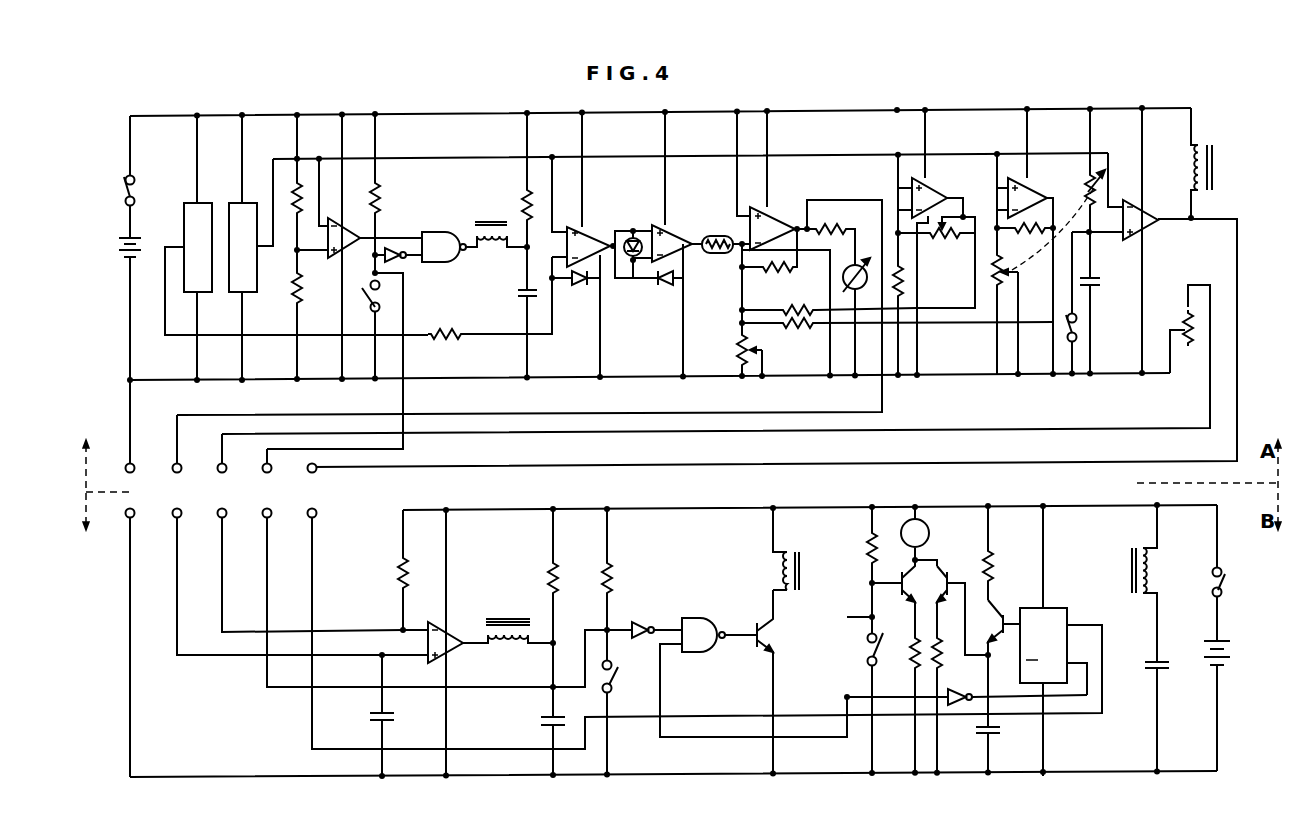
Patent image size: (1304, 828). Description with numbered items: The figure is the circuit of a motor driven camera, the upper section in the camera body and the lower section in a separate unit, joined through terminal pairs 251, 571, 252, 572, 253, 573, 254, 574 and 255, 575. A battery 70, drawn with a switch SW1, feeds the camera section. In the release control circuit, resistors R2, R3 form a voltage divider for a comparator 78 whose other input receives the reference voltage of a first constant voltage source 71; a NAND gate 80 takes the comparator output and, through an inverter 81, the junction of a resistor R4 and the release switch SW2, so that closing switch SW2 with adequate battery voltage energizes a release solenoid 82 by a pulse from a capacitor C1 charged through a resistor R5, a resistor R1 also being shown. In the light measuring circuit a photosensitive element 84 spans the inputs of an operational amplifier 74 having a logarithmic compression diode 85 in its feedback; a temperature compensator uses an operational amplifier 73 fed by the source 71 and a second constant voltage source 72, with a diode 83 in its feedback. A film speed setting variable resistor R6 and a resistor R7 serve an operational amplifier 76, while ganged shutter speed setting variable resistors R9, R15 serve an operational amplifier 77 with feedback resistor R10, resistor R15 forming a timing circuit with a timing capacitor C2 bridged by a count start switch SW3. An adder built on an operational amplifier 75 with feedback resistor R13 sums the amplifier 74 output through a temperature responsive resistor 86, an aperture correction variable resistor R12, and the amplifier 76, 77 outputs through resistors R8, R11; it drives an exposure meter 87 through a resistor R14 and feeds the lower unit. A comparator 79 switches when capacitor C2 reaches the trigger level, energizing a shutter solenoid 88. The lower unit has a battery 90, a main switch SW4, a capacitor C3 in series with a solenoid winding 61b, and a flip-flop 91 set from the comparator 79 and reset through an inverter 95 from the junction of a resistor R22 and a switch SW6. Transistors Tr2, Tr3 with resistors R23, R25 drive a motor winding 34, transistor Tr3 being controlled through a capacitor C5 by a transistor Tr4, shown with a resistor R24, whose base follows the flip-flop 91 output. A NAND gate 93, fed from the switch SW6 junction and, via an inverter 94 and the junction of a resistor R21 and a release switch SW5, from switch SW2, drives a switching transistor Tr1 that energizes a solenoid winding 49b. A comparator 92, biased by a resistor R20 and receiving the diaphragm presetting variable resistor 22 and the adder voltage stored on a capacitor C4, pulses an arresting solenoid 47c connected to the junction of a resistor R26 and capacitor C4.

The diaphragm presetting responsive variable resistor 22 is at (1183, 325).
The motor winding 34 is at (930, 533).
The solenoid of arresting control electromagnet 47c is at (519, 619).
The solenoid winding of release control electromagnet 49b is at (808, 549).
The solenoid winding 61b is at (1129, 583).
The battery 70 is at (115, 253).
The first constant voltage source 71 is at (251, 225).
The second constant voltage source 72 is at (296, 269).
The operational amplifier 73 is at (578, 238).
The operational amplifier 74 is at (663, 236).
The operational amplifier 75 is at (768, 228).
The operational amplifier 76 is at (928, 198).
The operational amplifier 77 is at (1028, 198).
The comparator 78 is at (340, 236).
The comparator 79 is at (1142, 219).
The NAND gate 80 is at (449, 247).
The inverter 81 is at (404, 259).
The camera release actuating solenoid 82 is at (485, 222).
The diode 83 is at (576, 316).
The photosensitive element 84 is at (630, 265).
The logarithmic compression diode 85 is at (658, 310).
The temperature responsive resistor 86 is at (726, 265).
The electric exposure meter 87 is at (846, 273).
The solenoid for shutter control electromagnet 88 is at (1216, 163).
The battery 90 is at (1229, 706).
The flip-flop 91 is at (1062, 610).
The comparator 92 is at (455, 649).
The NAND gate 93 is at (753, 677).
The inverter 94 is at (634, 626).
The inverter 95 is at (952, 696).
The connector terminal 251 is at (150, 433).
The terminal 252 is at (197, 451).
The terminal 253 is at (242, 460).
The terminal 254 is at (287, 468).
The terminal 255 is at (332, 485).
The connector terminal 571 is at (150, 641).
The terminal 572 is at (301, 580).
The terminal 573 is at (311, 569).
The terminal 574 is at (435, 596).
The terminal 575 is at (705, 627).
The resistor R1 is at (490, 322).
The resistor R2 is at (302, 184).
The resistor R3 is at (289, 314).
The resistor R4 is at (388, 195).
The resistor R5 is at (517, 201).
The film speed setting variable resistor R6 is at (936, 242).
The resistor R7 is at (905, 286).
The resistor R8 is at (829, 300).
The shutter speed setting variable resistor R9 is at (1037, 280).
The feedback resistor R10 is at (1025, 243).
The resistor R11 is at (897, 338).
The aperture correction factor setting variable resistor R12 is at (736, 354).
The feedback resistor R13 is at (769, 266).
The resistor R14 is at (834, 234).
The shutter speed setting variable resistor R15 is at (1081, 193).
The resistor R20 is at (421, 594).
The resistor R21 is at (625, 584).
The resistor R22 is at (870, 603).
The resistor R23 is at (912, 645).
The resistor R24 is at (1006, 553).
The resistor R25 is at (934, 648).
The resistor R26 is at (571, 613).
The capacitor C1 is at (518, 329).
The timing capacitor C2 is at (1103, 324).
The capacitor C3 is at (1170, 714).
The capacitor C4 is at (467, 714).
The capacitor C5 is at (1000, 713).
The switch SW1 is at (111, 191).
The camera release switch SW2 is at (368, 330).
The count start switch SW3 is at (1078, 327).
The main switch SW4 is at (1243, 573).
The release switch SW5 is at (635, 718).
The switch SW6 is at (897, 703).
The switching transistor Tr1 is at (782, 682).
The transistor Tr2 is at (899, 591).
The transistor Tr3 is at (951, 604).
The transistor Tr4 is at (996, 627).